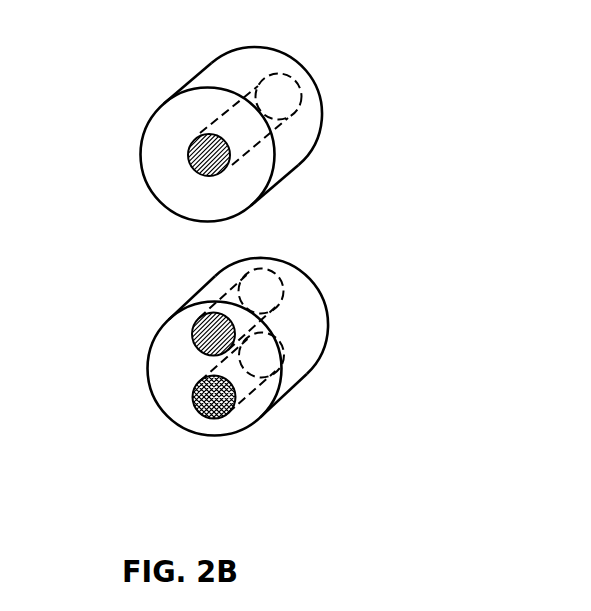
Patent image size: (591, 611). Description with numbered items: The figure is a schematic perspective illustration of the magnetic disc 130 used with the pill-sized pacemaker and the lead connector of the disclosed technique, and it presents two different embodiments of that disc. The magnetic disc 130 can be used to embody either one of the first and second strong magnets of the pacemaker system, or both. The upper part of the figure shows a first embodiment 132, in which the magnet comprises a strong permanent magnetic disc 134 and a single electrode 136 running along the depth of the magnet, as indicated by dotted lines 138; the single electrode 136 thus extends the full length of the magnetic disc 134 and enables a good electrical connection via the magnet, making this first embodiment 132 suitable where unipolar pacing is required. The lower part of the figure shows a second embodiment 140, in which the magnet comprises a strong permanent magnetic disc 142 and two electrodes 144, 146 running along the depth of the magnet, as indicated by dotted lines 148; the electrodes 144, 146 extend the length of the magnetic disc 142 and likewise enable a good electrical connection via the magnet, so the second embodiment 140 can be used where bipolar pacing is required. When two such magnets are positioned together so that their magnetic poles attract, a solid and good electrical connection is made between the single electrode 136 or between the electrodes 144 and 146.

The magnetic disc 130 is at (108, 462).
The first embodiment 132 is at (180, 63).
The strong permanent magnetic disc 134 is at (170, 126).
The single electrode 136 is at (190, 156).
The dotted lines 138 is at (278, 124).
The second embodiment 140 is at (330, 375).
The strong permanent magnetic disc 142 is at (178, 332).
The electrode 144 is at (192, 341).
The electrode 146 is at (198, 401).
The dotted lines 148 is at (287, 347).